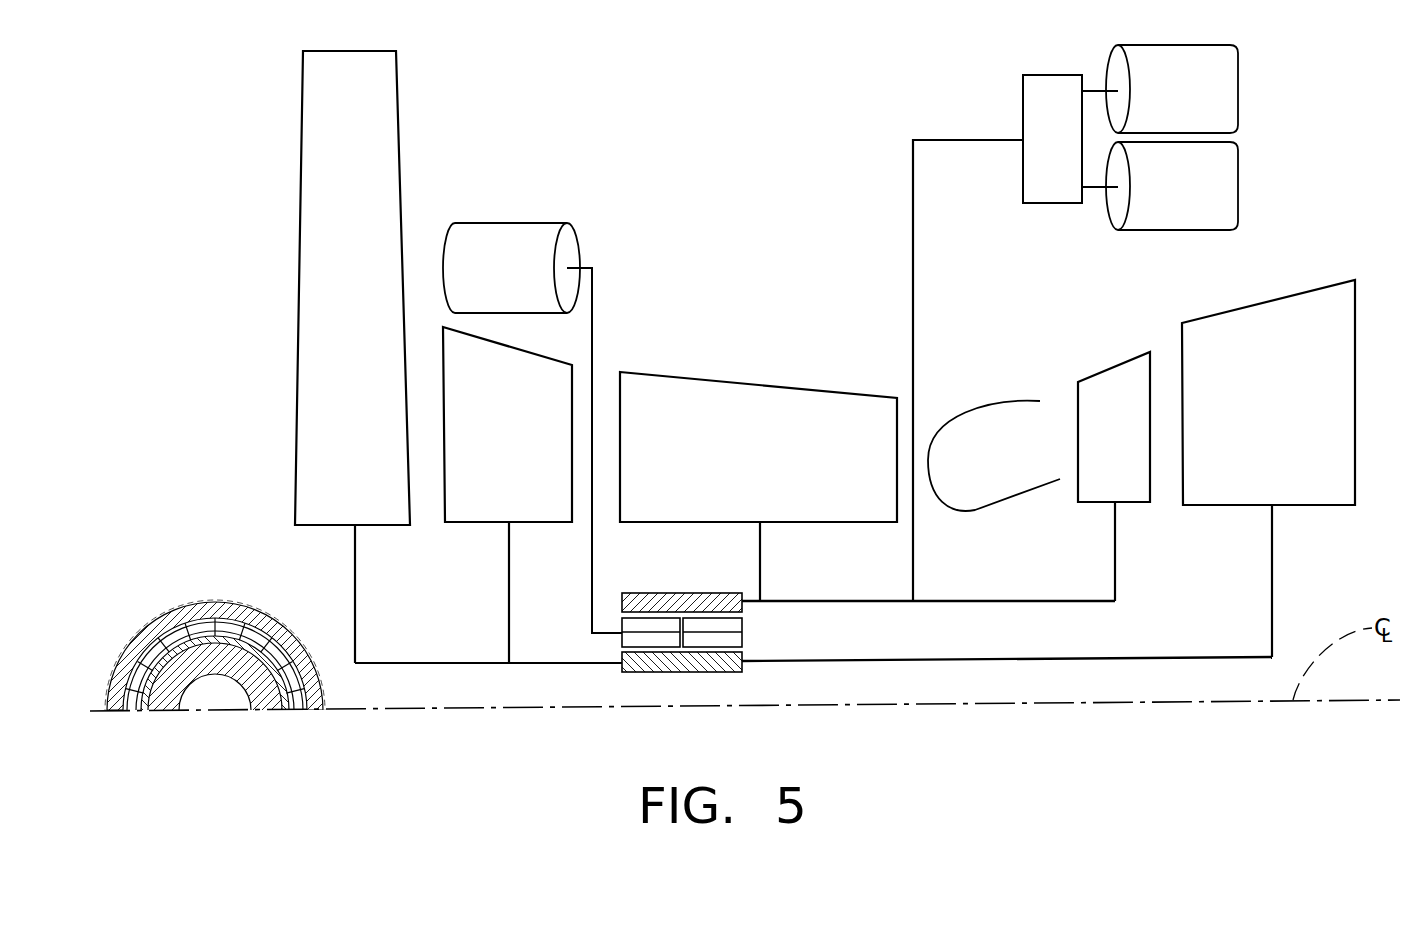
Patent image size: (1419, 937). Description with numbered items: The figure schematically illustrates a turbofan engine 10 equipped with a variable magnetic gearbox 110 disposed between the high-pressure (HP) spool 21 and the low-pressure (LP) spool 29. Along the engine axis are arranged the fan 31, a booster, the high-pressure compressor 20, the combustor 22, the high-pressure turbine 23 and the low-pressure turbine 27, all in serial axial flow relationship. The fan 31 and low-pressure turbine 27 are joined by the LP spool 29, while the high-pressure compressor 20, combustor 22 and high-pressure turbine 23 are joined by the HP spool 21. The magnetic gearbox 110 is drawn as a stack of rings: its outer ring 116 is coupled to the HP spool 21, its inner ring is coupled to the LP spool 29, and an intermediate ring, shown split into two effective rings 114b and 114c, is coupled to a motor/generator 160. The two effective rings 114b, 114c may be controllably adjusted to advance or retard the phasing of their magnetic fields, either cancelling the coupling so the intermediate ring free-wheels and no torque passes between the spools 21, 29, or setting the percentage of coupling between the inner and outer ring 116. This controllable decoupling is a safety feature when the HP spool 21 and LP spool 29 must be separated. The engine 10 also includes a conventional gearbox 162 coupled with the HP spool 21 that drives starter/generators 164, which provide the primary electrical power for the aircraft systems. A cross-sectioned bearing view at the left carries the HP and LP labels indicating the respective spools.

The turbofan engine 10 is at (258, 148).
The fan 31 is at (352, 357).
The motor/generator 160 is at (512, 223).
The high-pressure compressor 20 is at (758, 486).
The high-pressure spool 21 is at (955, 600).
The combustor 22 is at (994, 456).
The high-pressure turbine 23 is at (1114, 476).
The low-pressure turbine 27 is at (1268, 468).
The low-pressure spool 29 is at (1060, 660).
The variable magnetic gearbox 110 is at (634, 675).
The outer ring 116 is at (690, 593).
The effective ring 114b is at (620, 640).
The effective ring 114c is at (742, 627).
The conventional gearbox 162 is at (1023, 91).
The starter/generator 164 is at (1240, 76).
The high-pressure spool HP is at (208, 606).
The low-pressure spool LP is at (243, 641).